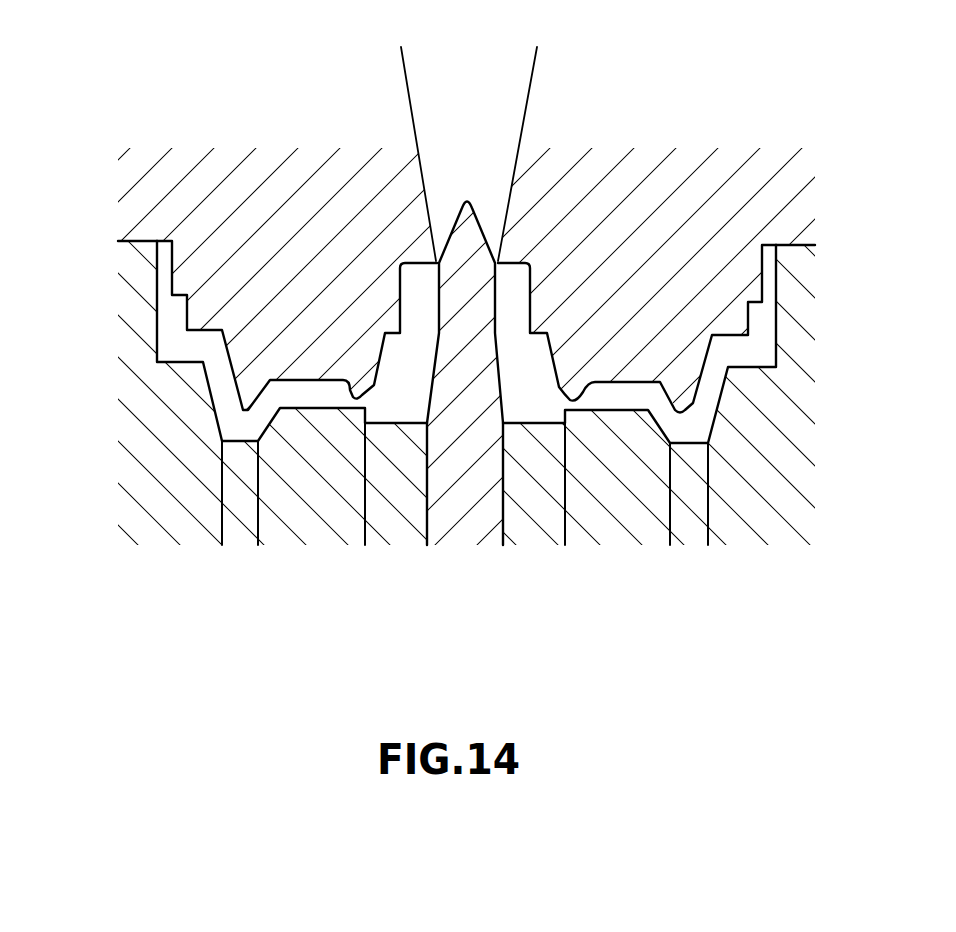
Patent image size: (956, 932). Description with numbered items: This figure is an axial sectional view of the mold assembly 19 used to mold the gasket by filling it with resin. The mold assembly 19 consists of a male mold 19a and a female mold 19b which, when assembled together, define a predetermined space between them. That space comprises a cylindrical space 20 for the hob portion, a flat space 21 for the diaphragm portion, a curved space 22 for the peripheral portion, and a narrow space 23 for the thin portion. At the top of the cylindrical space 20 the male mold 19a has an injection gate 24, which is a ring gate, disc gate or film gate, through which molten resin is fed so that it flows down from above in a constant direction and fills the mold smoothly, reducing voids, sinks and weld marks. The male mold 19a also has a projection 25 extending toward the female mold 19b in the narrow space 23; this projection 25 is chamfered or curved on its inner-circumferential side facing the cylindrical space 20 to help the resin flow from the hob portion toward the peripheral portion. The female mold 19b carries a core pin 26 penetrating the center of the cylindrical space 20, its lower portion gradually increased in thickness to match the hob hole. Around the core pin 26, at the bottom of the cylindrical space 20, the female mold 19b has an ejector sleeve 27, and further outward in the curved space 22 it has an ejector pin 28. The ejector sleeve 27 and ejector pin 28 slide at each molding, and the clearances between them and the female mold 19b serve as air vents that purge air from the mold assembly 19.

The mold assembly 19 is at (478, 351).
The male mold 19a is at (140, 193).
The female mold 19b is at (133, 505).
The cylindrical space 20 is at (422, 297).
The flat space 21 is at (637, 397).
The curved space 22 is at (762, 338).
The narrow space 23 is at (577, 405).
The injection gate 24 is at (528, 107).
The projection 25 is at (355, 397).
The core pin 26 is at (475, 522).
The ejector sleeve 27 is at (398, 522).
The ejector pin 28 is at (240, 525).